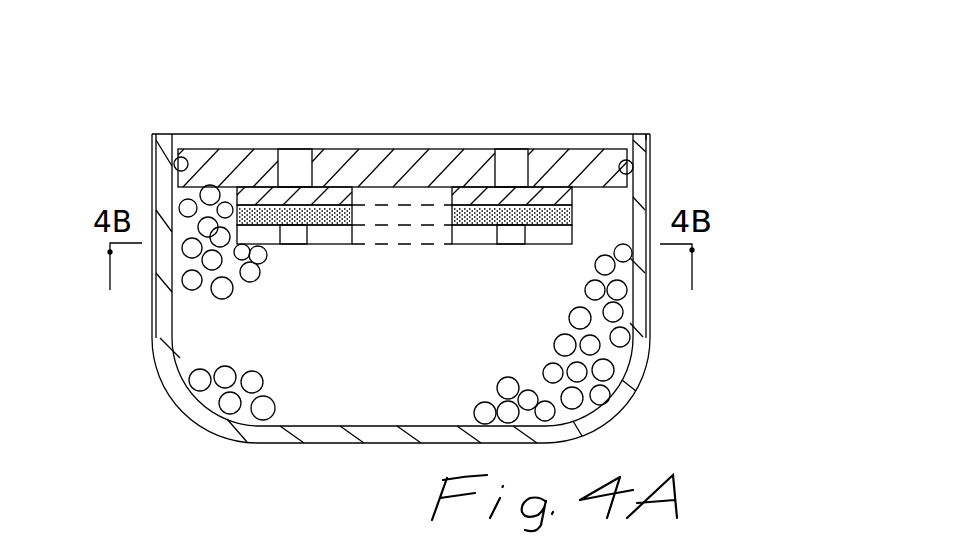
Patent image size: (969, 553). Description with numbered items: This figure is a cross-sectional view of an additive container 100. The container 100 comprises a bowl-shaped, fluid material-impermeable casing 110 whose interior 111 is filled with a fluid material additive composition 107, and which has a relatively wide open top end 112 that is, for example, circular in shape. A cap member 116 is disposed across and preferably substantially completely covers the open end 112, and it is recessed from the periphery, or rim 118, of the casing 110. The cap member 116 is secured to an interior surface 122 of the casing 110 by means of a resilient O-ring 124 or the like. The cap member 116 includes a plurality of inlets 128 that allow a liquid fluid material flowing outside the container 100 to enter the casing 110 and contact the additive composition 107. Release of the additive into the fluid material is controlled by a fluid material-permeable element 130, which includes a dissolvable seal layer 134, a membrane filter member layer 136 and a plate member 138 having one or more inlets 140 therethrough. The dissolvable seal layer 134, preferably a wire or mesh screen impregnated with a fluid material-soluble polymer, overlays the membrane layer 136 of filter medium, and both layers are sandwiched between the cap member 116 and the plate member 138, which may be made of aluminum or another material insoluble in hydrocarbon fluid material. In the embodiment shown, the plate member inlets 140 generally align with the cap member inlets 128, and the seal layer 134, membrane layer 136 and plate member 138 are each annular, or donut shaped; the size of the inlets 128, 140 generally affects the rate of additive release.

The container 100 is at (731, 111).
The fluid material additive composition 107 is at (623, 375).
The casing 110 is at (660, 327).
The interior 111 is at (393, 310).
The open top end 112 is at (575, 124).
The cap member 116 is at (440, 139).
The rim 118 is at (650, 133).
The interior surface 122 is at (200, 235).
The resilient O-ring 124 is at (187, 158).
The inlets 128 is at (290, 165).
The fluid material-permeable element 130 is at (614, 208).
The dissolvable seal layer 134 is at (345, 197).
The membrane filter member layer 136 is at (238, 209).
The plate member 138 is at (246, 234).
The plate member inlets 140 is at (283, 236).